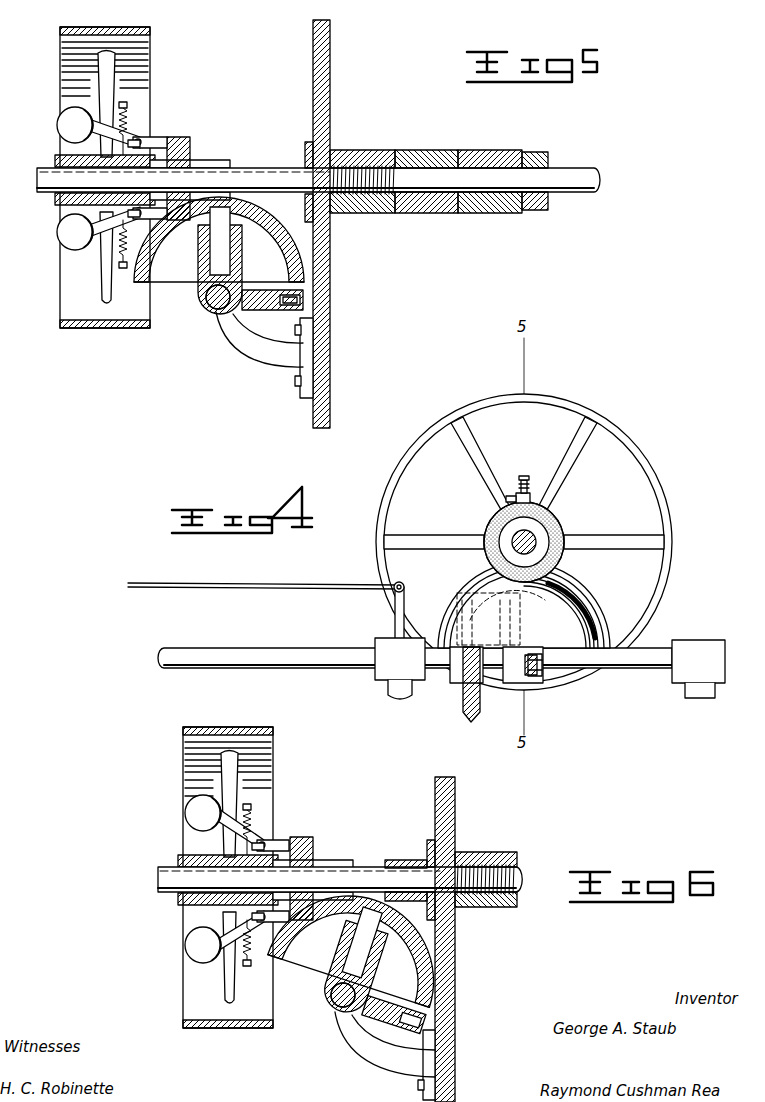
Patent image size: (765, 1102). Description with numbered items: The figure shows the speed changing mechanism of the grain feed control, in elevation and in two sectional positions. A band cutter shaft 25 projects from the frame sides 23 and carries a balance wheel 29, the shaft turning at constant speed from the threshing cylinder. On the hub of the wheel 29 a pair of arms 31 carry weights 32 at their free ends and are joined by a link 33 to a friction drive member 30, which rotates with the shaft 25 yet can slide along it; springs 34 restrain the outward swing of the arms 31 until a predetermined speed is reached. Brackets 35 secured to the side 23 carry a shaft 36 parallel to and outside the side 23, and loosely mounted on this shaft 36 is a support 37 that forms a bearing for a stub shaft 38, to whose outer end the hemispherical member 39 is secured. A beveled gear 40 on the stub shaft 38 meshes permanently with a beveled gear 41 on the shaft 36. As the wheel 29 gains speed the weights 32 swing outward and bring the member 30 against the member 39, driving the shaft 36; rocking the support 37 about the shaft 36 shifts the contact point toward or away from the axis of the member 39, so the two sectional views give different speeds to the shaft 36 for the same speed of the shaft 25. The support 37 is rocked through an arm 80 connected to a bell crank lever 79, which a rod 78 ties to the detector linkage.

In FIG. 5, the frame side 23 is at (313, 102).
In FIG. 6, the frame side 23 is at (435, 804).
In FIG. 5, the band cutter shaft 25 is at (243, 172).
In FIG. 4, the band cutter shaft 25 is at (538, 540).
In FIG. 6, the band cutter shaft 25 is at (415, 872).
In FIG. 5, the balance wheel 29 is at (130, 333).
In FIG. 4, the balance wheel 29 is at (576, 404).
In FIG. 6, the balance wheel 29 is at (246, 877).
In FIG. 5, the friction drive member 30 is at (185, 140).
In FIG. 4, the friction drive member 30 is at (556, 516).
In FIG. 6, the friction drive member 30 is at (265, 871).
In FIG. 5, the arm 31 is at (100, 118).
In FIG. 4, the arm 31 is at (510, 497).
In FIG. 6, the arm 31 is at (236, 828).
In FIG. 5, the weight 32 is at (62, 128).
In FIG. 6, the weight 32 is at (203, 879).
In FIG. 5, the link 33 is at (147, 140).
In FIG. 6, the link 33 is at (278, 843).
In FIG. 5, the spring 34 is at (127, 108).
In FIG. 4, the spring 34 is at (530, 488).
In FIG. 6, the spring 34 is at (252, 958).
In FIG. 5, the bracket 35 is at (268, 355).
In FIG. 4, the bracket 35 is at (400, 690).
In FIG. 6, the bracket 35 is at (382, 1045).
In FIG. 5, the shaft 36 is at (200, 305).
In FIG. 4, the shaft 36 is at (280, 648).
In FIG. 6, the shaft 36 is at (338, 1010).
In FIG. 5, the support 37 is at (202, 269).
In FIG. 4, the support 37 is at (518, 688).
In FIG. 6, the support 37 is at (326, 992).
In FIG. 5, the stub shaft 38 is at (241, 241).
In FIG. 6, the stub shaft 38 is at (356, 970).
In FIG. 5, the hemispherical member 39 is at (219, 239).
In FIG. 4, the hemispherical member 39 is at (586, 616).
In FIG. 6, the hemispherical member 39 is at (392, 928).
In FIG. 5, the beveled gear 40 is at (285, 222).
In FIG. 4, the beveled gear 40 is at (476, 585).
In FIG. 6, the beveled gear 40 is at (435, 946).
In FIG. 4, the beveled gear 41 is at (479, 716).
In FIG. 4, the rod 78 is at (262, 586).
In FIG. 4, the bell crank lever 79 is at (393, 623).
In FIG. 6, the bell crank lever 79 is at (438, 1030).
In FIG. 5, the arm 80 is at (307, 299).
In FIG. 4, the arm 80 is at (536, 680).
In FIG. 6, the arm 80 is at (440, 1010).